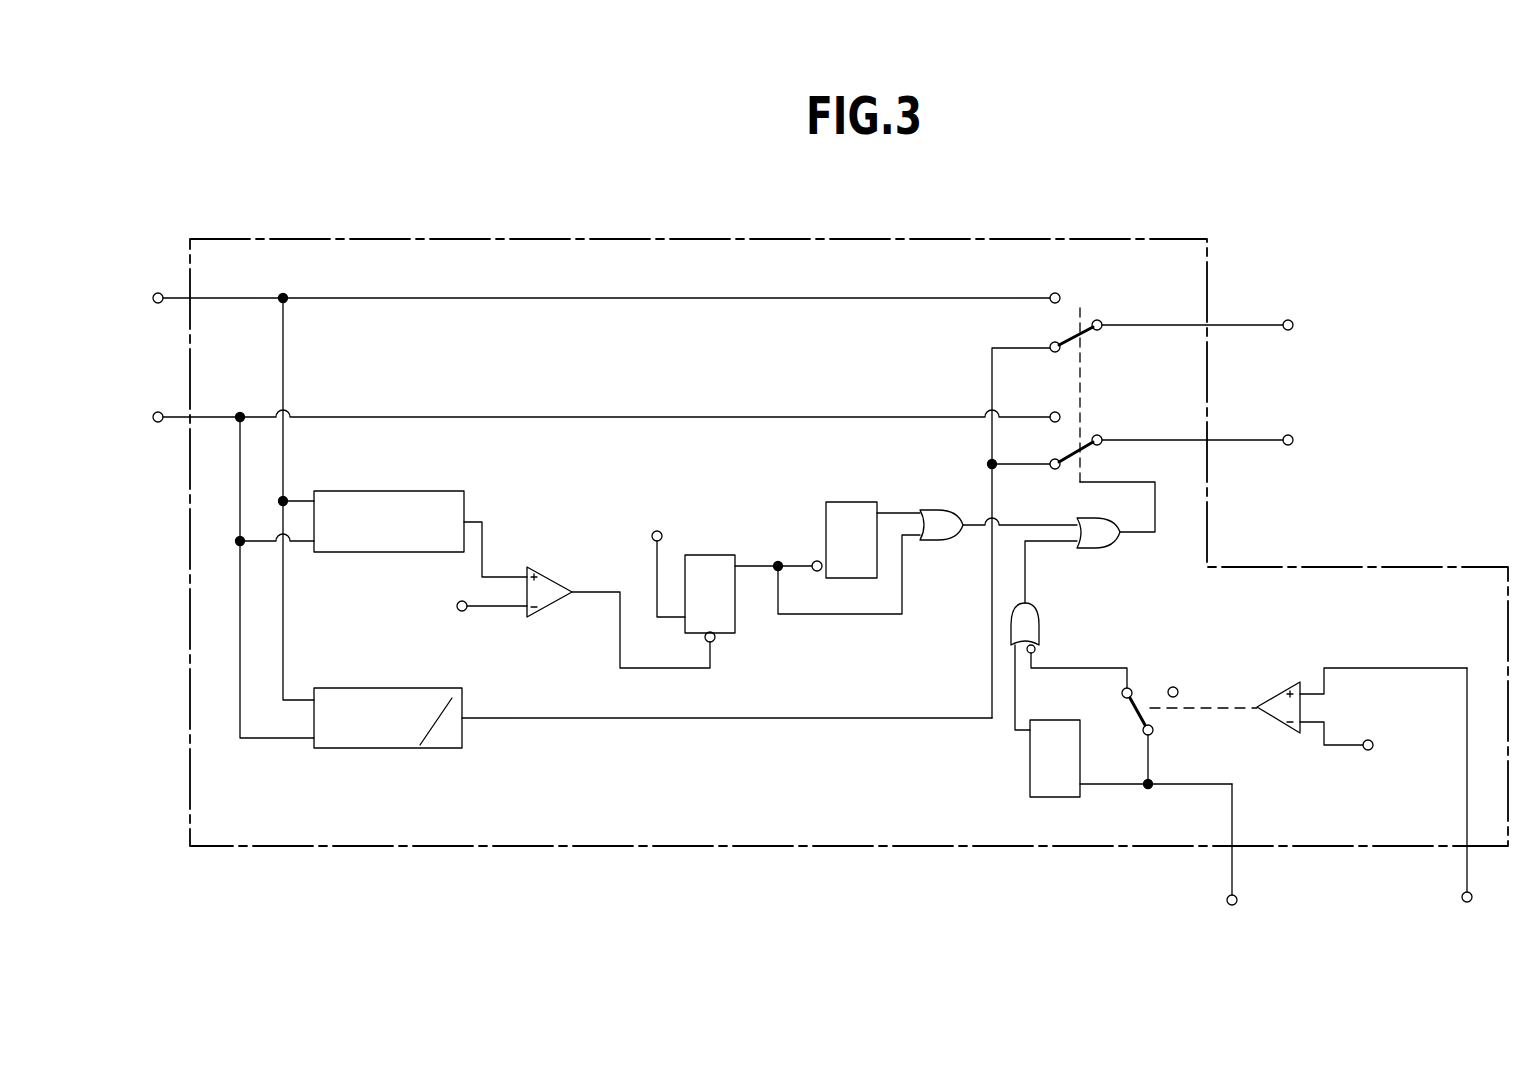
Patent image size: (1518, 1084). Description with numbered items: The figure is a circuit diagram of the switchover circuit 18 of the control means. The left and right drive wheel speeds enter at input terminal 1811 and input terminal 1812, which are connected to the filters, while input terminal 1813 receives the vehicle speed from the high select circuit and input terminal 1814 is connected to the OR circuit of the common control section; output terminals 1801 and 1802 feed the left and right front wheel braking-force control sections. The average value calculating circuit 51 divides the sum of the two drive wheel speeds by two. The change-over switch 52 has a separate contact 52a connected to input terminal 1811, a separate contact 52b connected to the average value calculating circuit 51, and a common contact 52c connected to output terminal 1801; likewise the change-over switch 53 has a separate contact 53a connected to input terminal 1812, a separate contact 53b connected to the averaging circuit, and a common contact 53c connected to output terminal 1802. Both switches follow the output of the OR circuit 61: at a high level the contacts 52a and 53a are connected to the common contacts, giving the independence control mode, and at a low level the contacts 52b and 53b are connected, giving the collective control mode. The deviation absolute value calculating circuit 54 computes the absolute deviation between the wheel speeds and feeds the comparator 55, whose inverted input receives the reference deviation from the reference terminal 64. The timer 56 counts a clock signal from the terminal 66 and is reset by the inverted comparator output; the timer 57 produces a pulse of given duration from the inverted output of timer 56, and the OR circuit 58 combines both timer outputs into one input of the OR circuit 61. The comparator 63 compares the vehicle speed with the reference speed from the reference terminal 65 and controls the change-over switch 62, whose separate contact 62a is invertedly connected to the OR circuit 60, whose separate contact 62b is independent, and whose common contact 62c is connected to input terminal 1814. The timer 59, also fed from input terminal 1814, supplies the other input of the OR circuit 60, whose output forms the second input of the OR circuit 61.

The switchover circuit 18 is at (753, 848).
The input terminal 1811 is at (154, 422).
The input terminal 1812 is at (154, 303).
The output terminal 1801 is at (1292, 445).
The output terminal 1802 is at (1291, 320).
The input terminal 1813 is at (1465, 903).
The input terminal 1814 is at (1231, 905).
The average value calculating circuit 51 is at (376, 690).
The deviation absolute value calculating circuit 54 is at (394, 492).
The comparator 55 is at (548, 573).
The timer 56 is at (704, 560).
The timer 57 is at (848, 505).
The OR circuit 58 is at (941, 510).
The timer 59 is at (1030, 768).
The OR circuit 60 is at (1044, 612).
The OR circuit 61 is at (1102, 548).
The change-over switch 62 is at (1171, 713).
The separate contact 62a is at (1124, 700).
The separate contact 62b is at (1176, 687).
The common contact 62c is at (1153, 733).
The comparator 63 is at (1275, 695).
The reference terminal 64 is at (456, 603).
The reference terminal 65 is at (1370, 751).
The terminal 66 is at (657, 531).
The change-over switch 52 is at (1081, 448).
The separate contact 52a is at (1050, 411).
The separate contact 52b is at (1050, 470).
The common contact 52c is at (1102, 444).
The change-over switch 53 is at (1074, 317).
The separate contact 53a is at (1050, 291).
The separate contact 53b is at (1050, 344).
The common contact 53c is at (1102, 321).